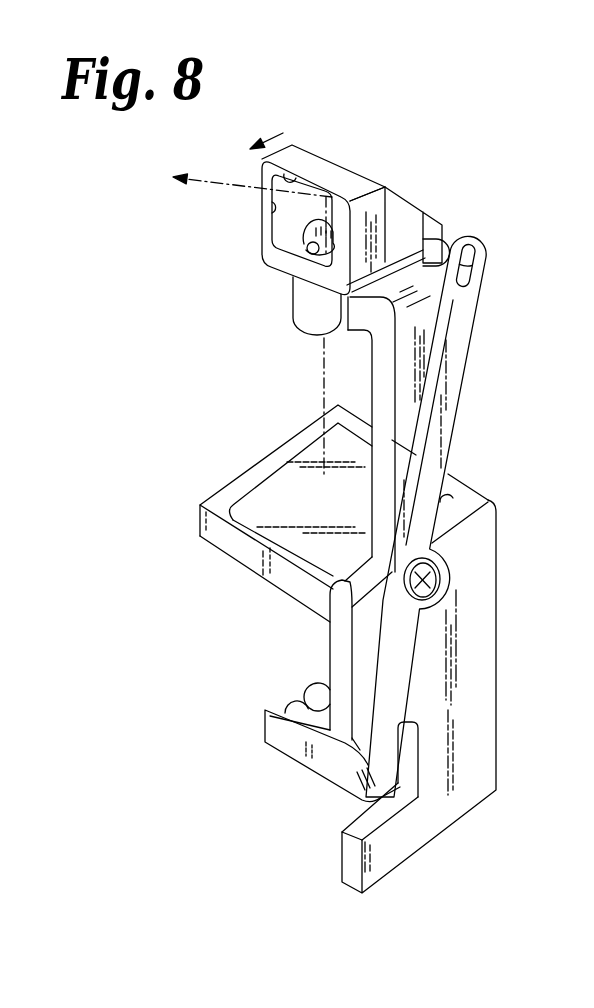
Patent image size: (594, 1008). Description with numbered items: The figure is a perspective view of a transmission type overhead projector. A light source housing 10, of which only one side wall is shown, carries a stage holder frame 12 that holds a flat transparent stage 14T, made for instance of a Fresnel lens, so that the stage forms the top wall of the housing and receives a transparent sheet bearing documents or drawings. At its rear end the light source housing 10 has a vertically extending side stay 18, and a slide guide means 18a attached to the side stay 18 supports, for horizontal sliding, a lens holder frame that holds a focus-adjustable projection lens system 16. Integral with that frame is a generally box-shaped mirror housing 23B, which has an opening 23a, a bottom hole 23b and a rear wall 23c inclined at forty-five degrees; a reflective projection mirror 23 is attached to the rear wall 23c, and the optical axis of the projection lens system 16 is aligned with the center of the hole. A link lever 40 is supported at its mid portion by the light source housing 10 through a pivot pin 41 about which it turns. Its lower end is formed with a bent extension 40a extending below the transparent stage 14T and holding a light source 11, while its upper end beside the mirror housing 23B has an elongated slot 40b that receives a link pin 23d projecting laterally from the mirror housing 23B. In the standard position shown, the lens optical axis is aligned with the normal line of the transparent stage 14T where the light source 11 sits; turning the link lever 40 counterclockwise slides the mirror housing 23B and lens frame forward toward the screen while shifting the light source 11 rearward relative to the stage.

The light source housing 10 is at (488, 668).
The light source 11 is at (303, 681).
The stage holder frame 12 is at (210, 541).
The transparent stage 14T is at (268, 488).
The projection lens system 16 is at (298, 300).
The side stay 18 is at (413, 361).
The slide guide means 18a is at (402, 243).
The reflective projection mirror 23 is at (291, 174).
The opening 23a is at (268, 205).
The bottom hole 23b is at (306, 252).
The mirror housing 23B is at (363, 215).
The rear wall 23c is at (292, 145).
The link pin 23d is at (440, 241).
The link lever 40 is at (442, 419).
The bent extension 40a is at (267, 726).
The elongated slot 40b is at (478, 271).
The pivot pin 41 is at (436, 577).